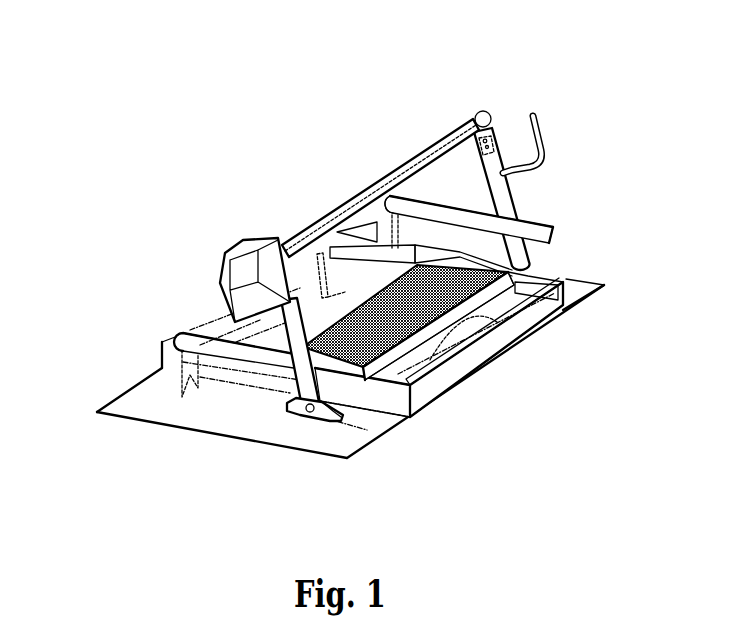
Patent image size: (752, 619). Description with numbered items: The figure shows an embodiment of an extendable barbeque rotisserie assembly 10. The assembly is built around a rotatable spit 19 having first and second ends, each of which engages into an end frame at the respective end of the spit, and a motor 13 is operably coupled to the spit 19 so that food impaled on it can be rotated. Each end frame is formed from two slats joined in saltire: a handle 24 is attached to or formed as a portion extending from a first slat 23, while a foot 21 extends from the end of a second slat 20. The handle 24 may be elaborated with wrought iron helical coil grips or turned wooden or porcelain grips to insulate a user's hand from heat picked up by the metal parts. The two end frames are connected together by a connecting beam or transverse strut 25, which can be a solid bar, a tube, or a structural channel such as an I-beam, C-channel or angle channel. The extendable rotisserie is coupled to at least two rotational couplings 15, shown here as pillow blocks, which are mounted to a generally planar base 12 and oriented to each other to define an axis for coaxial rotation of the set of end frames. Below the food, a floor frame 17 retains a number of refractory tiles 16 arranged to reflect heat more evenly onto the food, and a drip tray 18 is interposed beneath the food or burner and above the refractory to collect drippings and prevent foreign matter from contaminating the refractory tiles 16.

The barbeque rotisserie assembly 10 is at (99, 178).
The base 12 is at (167, 427).
The motor 13 is at (220, 268).
The rotational couplings 15 is at (360, 428).
The refractory tiles 16 is at (507, 294).
The floor frame 17 is at (450, 377).
The drip tray 18 is at (507, 302).
The rotatable spit 19 is at (427, 147).
The second slat 20 is at (463, 203).
The foot 21 is at (556, 233).
The first slat 23 is at (512, 197).
The handle 24 is at (537, 127).
The transverse strut 25 is at (350, 203).